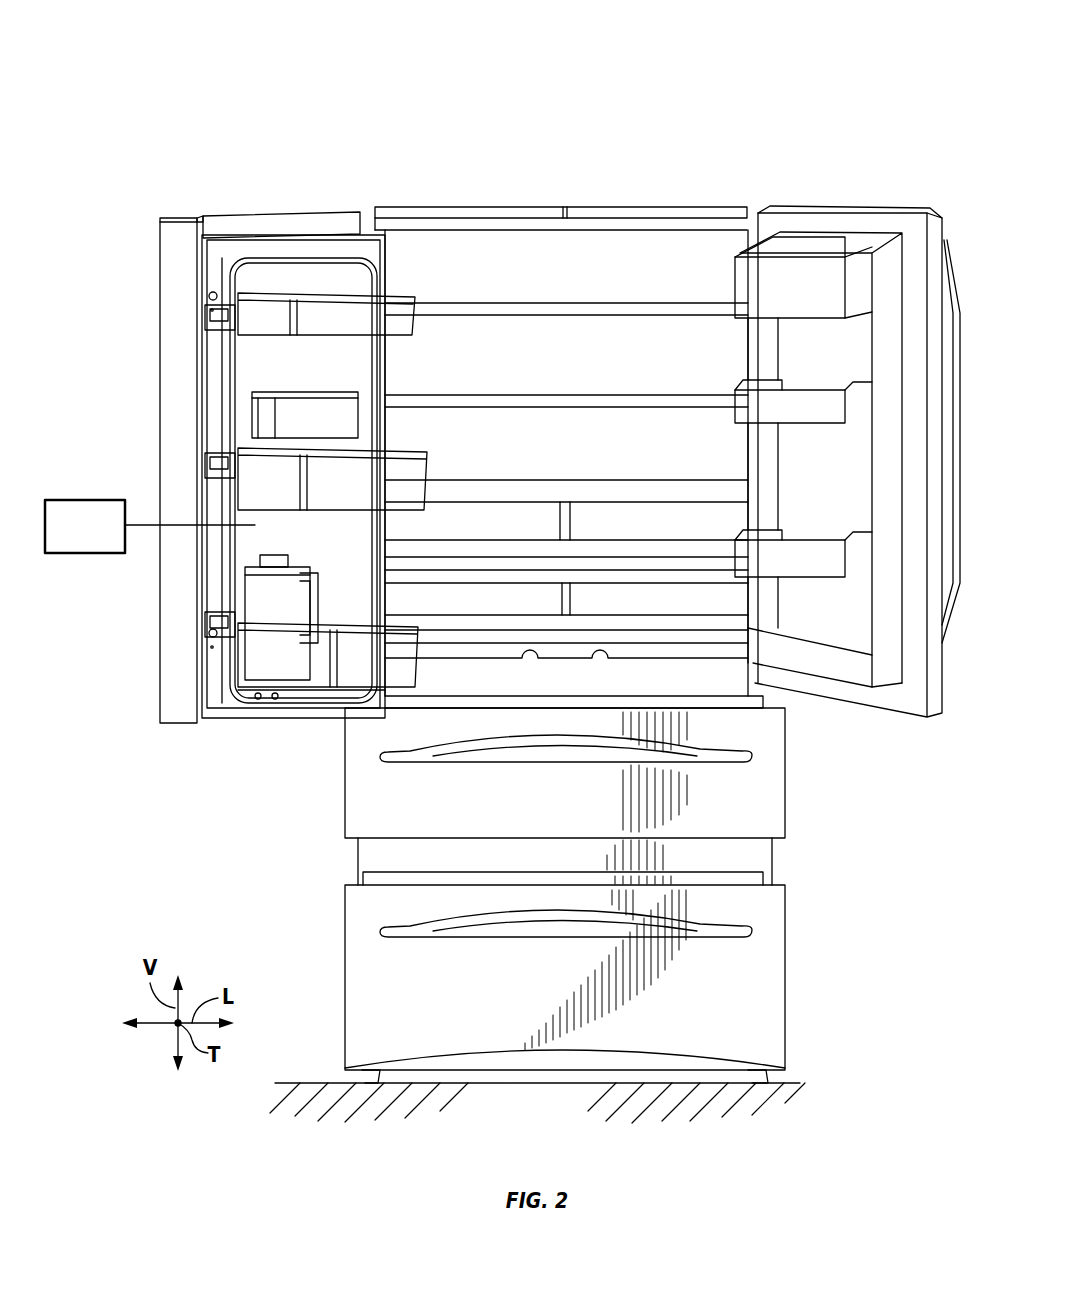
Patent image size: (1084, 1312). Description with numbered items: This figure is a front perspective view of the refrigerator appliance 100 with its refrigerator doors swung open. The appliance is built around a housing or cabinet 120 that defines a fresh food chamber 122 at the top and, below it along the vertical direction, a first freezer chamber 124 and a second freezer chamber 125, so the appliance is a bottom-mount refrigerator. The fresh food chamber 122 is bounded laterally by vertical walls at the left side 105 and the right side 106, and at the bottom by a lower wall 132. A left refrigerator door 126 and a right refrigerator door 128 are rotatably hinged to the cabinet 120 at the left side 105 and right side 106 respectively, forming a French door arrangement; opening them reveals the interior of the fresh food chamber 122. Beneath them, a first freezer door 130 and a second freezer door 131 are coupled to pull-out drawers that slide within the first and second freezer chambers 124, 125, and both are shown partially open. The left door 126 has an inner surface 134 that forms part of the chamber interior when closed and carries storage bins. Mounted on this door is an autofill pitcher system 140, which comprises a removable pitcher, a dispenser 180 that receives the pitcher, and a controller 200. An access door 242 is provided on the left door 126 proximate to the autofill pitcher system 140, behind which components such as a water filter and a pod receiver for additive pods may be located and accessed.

The refrigerator appliance 100 is at (722, 62).
The left side 105 is at (392, 203).
The right side 106 is at (783, 193).
The cabinet 120 is at (355, 845).
The fresh food chamber 122 is at (632, 250).
The first freezer chamber 124 is at (440, 702).
The second freezer chamber 125 is at (403, 875).
The left refrigerator door 126 is at (330, 212).
The right refrigerator door 128 is at (850, 205).
The first freezer door 130 is at (763, 798).
The second freezer door 131 is at (760, 978).
The lower wall 132 is at (707, 688).
The inner surface 134 is at (290, 222).
The autofill pitcher system 140 is at (225, 607).
The dispenser 180 is at (255, 545).
The controller 200 is at (75, 500).
The access door 242 is at (335, 412).